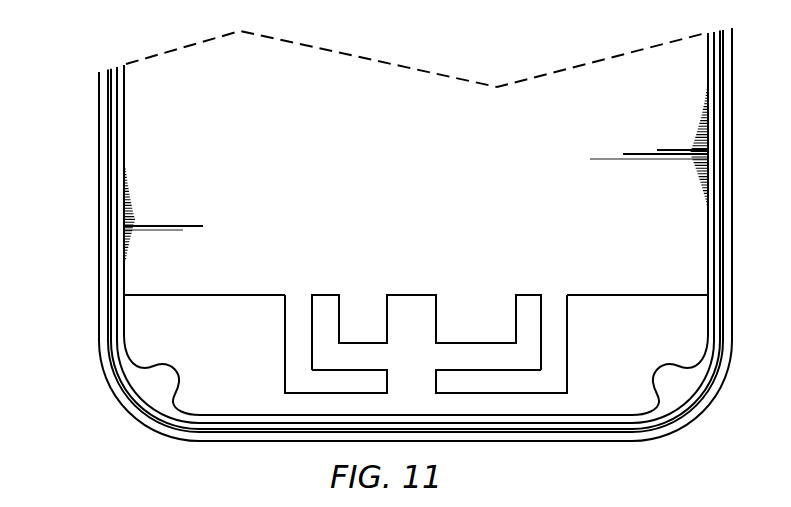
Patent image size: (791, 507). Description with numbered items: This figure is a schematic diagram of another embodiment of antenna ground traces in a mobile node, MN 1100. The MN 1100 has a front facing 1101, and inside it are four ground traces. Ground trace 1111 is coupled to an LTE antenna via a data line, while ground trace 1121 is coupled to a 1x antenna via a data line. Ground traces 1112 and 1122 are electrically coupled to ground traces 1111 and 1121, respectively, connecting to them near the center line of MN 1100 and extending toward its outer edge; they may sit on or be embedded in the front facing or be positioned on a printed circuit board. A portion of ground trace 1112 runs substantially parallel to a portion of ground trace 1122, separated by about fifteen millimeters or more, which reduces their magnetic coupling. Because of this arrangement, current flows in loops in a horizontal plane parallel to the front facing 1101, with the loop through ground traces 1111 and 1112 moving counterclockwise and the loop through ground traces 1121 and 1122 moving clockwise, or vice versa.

The MN 1100 is at (106, 45).
The front facing 1101 is at (438, 165).
The ground trace 1111 is at (348, 368).
The ground trace 1112 is at (334, 394).
The ground trace 1121 is at (472, 368).
The ground trace 1122 is at (499, 394).